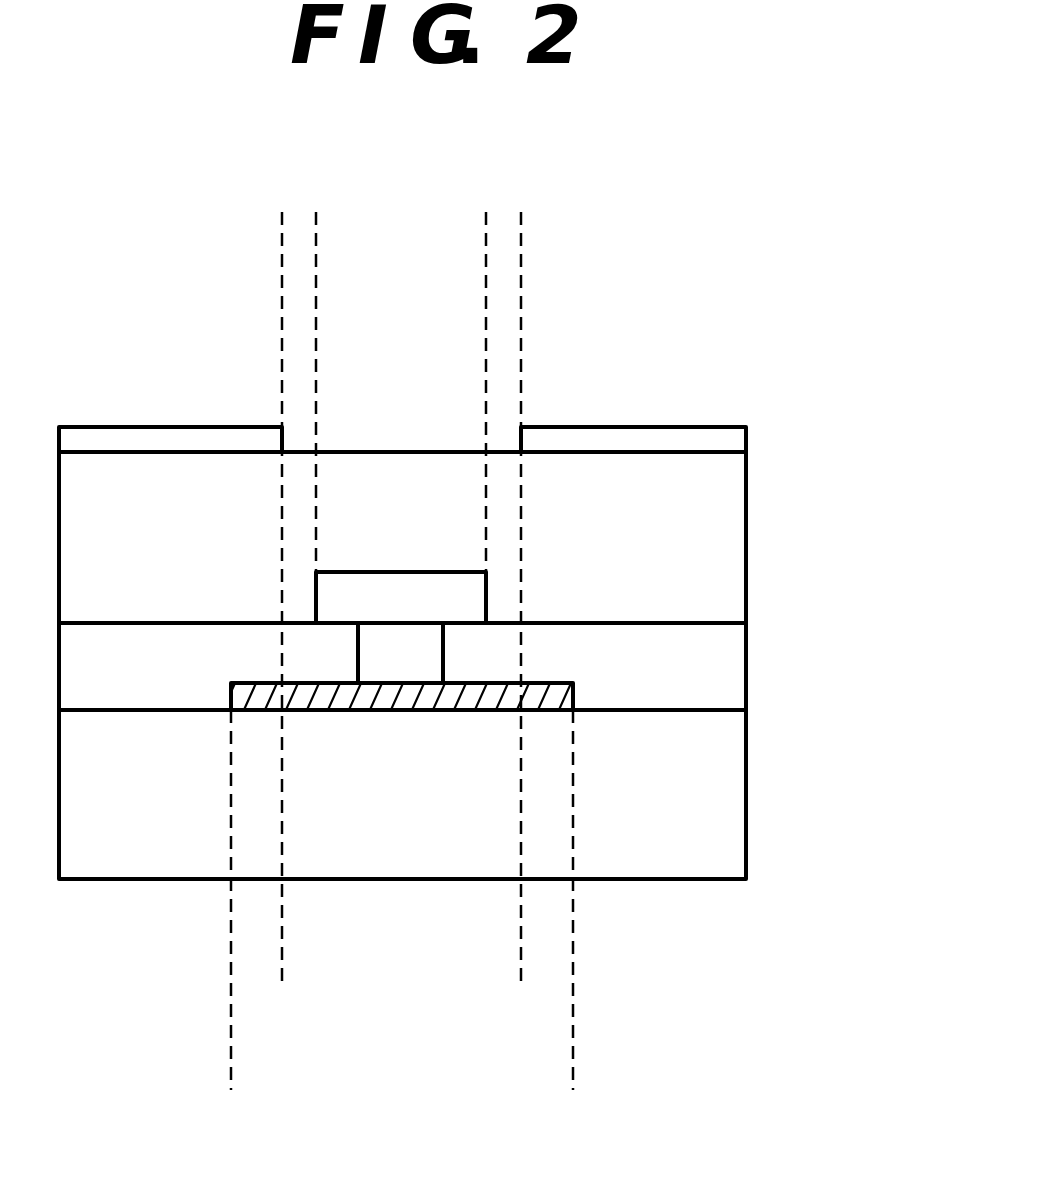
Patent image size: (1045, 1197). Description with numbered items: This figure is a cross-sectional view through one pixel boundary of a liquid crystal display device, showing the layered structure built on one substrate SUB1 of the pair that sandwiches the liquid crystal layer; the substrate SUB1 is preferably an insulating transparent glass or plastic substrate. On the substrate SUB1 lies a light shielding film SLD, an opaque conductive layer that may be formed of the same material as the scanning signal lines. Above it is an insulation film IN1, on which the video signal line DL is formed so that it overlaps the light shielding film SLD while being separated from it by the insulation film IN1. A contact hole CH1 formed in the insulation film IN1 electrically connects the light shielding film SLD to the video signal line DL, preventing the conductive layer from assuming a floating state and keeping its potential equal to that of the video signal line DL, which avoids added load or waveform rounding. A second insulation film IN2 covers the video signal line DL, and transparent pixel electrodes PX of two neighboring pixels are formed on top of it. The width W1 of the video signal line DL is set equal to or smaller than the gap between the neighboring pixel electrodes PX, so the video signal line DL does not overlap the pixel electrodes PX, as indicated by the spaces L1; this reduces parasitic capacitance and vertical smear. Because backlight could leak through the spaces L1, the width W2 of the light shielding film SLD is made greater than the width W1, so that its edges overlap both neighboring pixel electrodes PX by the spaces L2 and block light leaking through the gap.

The pixel electrode PX is at (158, 427).
The video signal line DL is at (391, 572).
The contact hole CH1 is at (445, 651).
The light shielding film SLD is at (520, 683).
The second insulation film IN2 is at (746, 515).
The insulation film IN1 is at (746, 662).
The substrate SUB1 is at (746, 797).
The space L1 is at (304, 226).
The width of the video signal line W1 is at (464, 281).
The space L2 is at (270, 974).
The width of the light shielding film W2 is at (549, 1079).